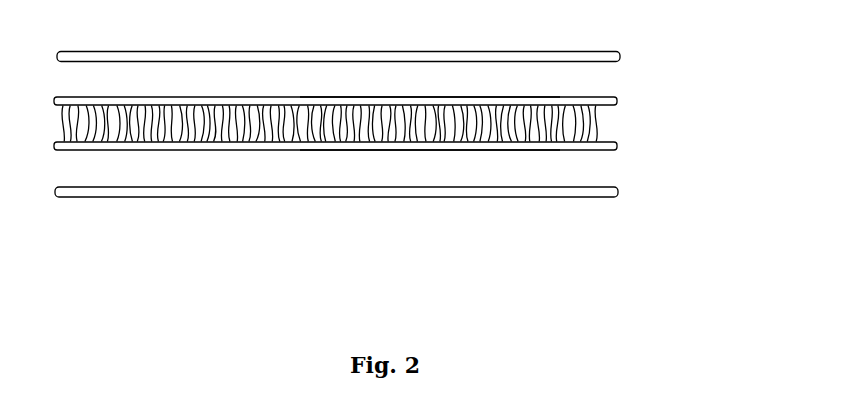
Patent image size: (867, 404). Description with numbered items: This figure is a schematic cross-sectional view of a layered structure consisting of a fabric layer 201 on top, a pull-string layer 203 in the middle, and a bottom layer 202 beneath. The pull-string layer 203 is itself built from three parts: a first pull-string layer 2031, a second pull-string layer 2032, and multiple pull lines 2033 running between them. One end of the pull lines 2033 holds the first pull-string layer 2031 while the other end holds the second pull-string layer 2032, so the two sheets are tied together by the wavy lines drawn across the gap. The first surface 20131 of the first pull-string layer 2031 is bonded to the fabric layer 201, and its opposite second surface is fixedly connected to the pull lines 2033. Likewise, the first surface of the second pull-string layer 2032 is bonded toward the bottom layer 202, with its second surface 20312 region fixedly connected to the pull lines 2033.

The fabric layer 201 is at (298, 61).
The bottom layer 202 is at (318, 190).
The pull-string layer 203 is at (370, 129).
The first pull-string layer 2031 is at (237, 98).
The first surface of the first pull-string layer 20131 is at (437, 97).
The second pull-string layer 2032 is at (248, 147).
The second surface of second film layer 20312 is at (443, 138).
The pull lines 2033 is at (600, 123).